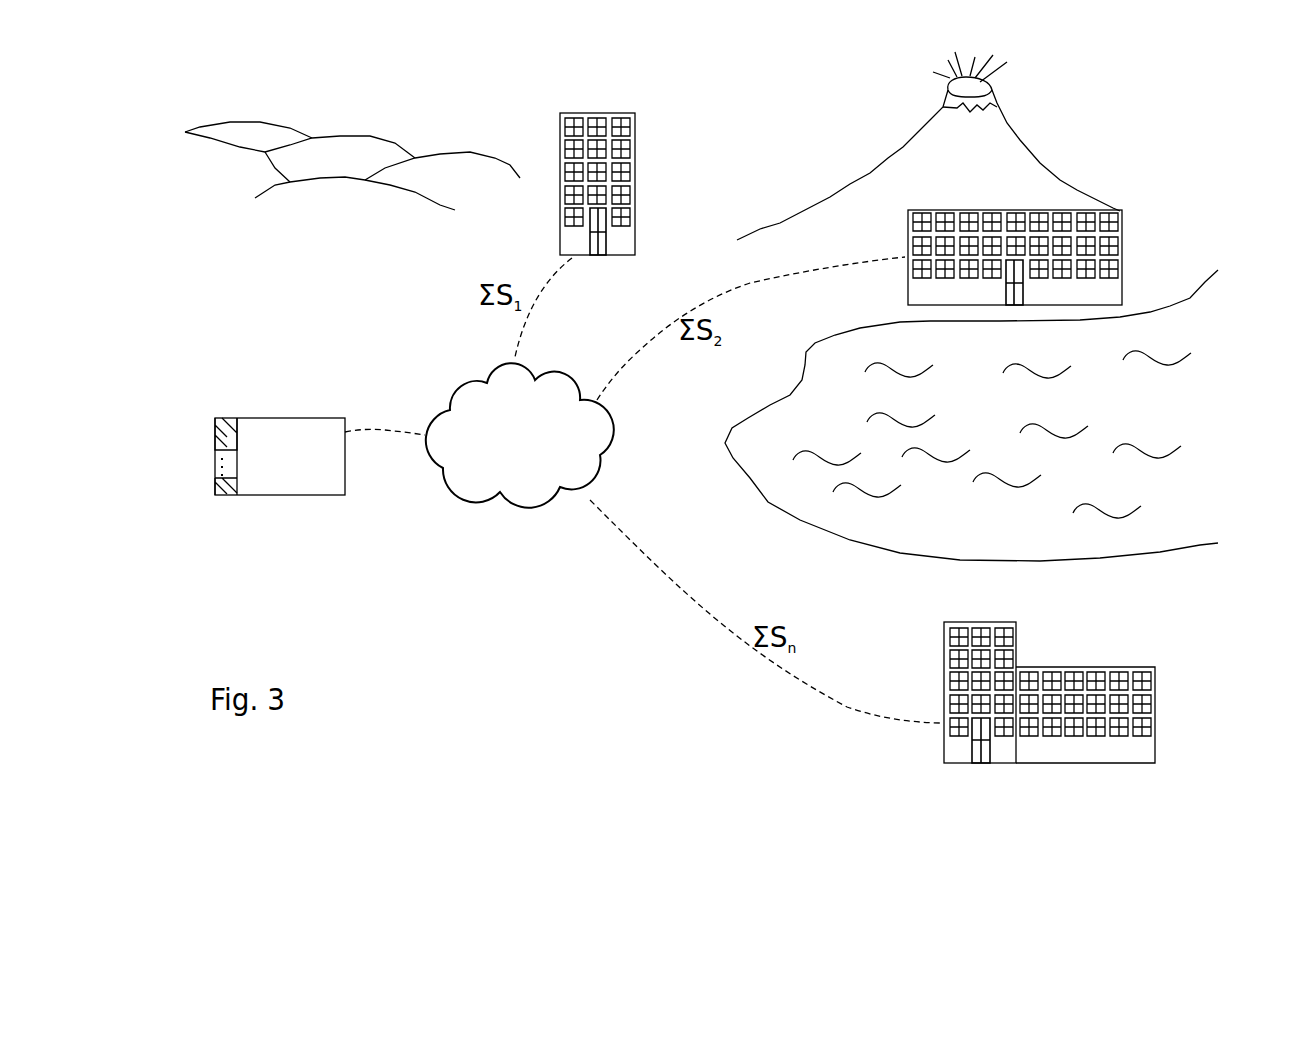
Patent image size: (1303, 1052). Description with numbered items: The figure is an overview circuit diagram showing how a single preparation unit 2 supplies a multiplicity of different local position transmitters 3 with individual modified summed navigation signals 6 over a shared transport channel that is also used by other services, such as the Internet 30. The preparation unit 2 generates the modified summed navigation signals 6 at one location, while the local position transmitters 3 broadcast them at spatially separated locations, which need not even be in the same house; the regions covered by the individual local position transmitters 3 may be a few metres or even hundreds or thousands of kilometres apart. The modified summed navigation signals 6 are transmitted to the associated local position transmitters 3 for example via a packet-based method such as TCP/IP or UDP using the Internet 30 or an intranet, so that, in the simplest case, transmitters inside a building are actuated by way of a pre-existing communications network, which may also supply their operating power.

The preparation unit 2 is at (272, 418).
The modified summed navigation signals 6 is at (385, 430).
The Internet network 30 is at (477, 505).
The local position transmitters 3 is at (627, 122).